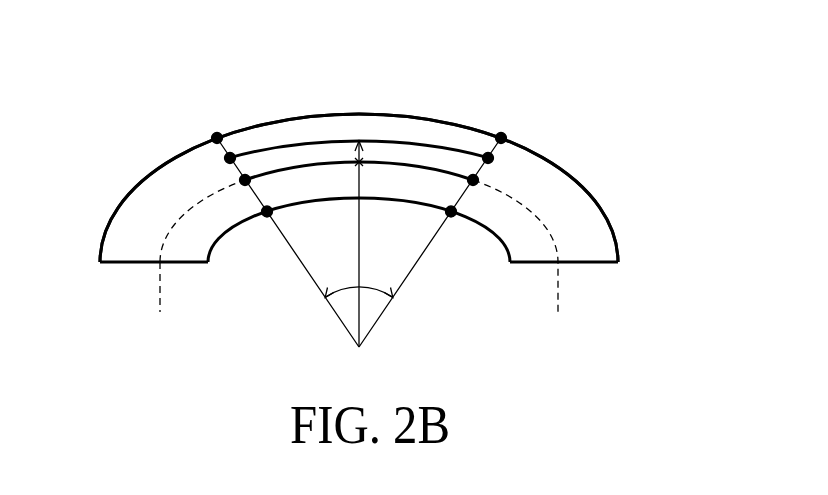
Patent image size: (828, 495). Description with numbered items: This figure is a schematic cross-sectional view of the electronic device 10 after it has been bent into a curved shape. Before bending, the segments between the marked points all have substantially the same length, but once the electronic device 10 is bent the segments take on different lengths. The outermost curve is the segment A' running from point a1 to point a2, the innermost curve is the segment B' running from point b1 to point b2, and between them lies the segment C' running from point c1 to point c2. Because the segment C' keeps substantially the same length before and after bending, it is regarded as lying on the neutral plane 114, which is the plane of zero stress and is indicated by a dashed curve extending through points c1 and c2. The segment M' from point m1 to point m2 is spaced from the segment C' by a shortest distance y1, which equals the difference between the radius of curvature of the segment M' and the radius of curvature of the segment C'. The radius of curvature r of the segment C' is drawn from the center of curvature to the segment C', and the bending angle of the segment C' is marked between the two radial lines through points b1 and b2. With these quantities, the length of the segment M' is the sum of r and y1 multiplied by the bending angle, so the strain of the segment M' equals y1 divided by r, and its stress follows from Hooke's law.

The electronic device 10 is at (597, 205).
The neutral plane 114 is at (557, 285).
The segment A' is at (359, 147).
The segment M' is at (359, 96).
The segment C' is at (359, 118).
The segment B' is at (359, 164).
The point a1 is at (214, 137).
The point a2 is at (504, 137).
The point m1 is at (228, 158).
The point m2 is at (490, 158).
The point c1 is at (242, 181).
The point c2 is at (476, 180).
The point b1 is at (267, 216).
The point b2 is at (451, 216).
The difference in radius of curvature y1 is at (355, 153).
The radius of curvature r is at (351, 244).